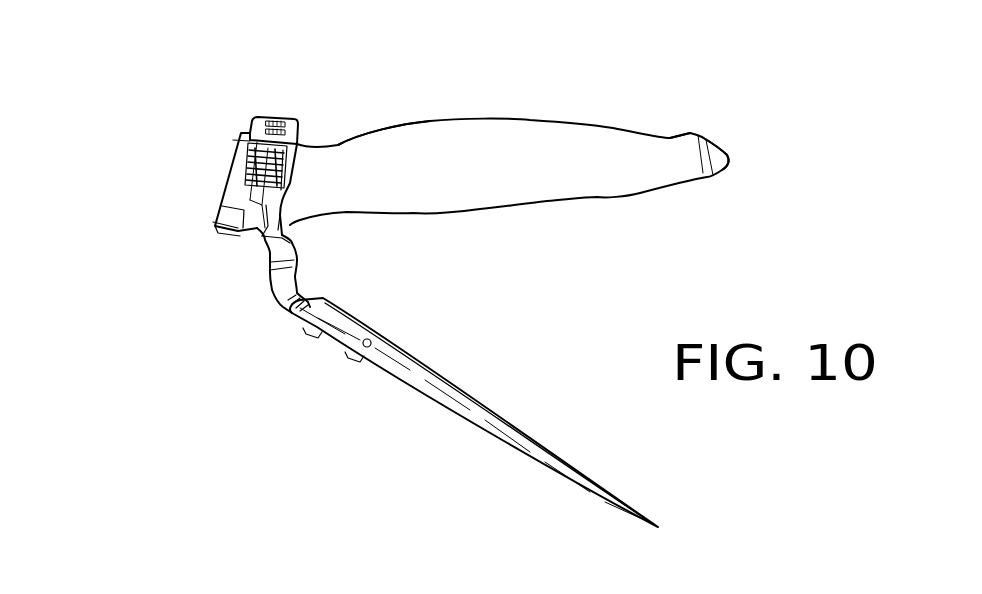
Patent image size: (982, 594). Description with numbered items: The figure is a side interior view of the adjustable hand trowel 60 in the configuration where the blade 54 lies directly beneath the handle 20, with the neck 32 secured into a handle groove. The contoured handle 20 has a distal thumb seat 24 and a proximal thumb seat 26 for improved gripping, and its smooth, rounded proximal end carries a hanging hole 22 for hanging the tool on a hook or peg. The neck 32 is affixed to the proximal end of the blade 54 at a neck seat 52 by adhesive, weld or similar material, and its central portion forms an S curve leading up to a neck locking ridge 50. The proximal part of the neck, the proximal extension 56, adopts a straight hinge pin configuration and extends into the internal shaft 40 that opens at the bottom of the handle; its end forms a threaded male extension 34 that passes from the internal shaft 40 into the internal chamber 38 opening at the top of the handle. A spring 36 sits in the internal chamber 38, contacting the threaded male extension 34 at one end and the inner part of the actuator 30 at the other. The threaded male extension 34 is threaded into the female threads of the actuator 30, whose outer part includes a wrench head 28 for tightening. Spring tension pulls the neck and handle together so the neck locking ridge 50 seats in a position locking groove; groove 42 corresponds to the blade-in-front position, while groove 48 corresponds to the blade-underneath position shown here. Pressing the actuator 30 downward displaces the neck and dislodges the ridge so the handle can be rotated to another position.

The handle 20 is at (482, 168).
The hanging hole 22 is at (713, 152).
The distal thumb seat 24 is at (338, 142).
The proximal thumb seat 26 is at (673, 133).
The wrench head 28 is at (278, 113).
The actuator 30 is at (265, 112).
The neck 32 is at (282, 260).
The threaded male extension 34 is at (258, 138).
The spring 36 is at (288, 163).
The internal chamber 38 is at (247, 150).
The internal shaft 40 is at (235, 208).
The position locking groove 42 is at (277, 237).
The position locking groove 48 is at (212, 230).
The neck locking ridge 50 is at (287, 235).
The neck seat 52 is at (307, 298).
The blade 54 is at (427, 380).
The proximal extension 56 is at (250, 193).
The adjustable hand trowel 60 is at (108, 68).